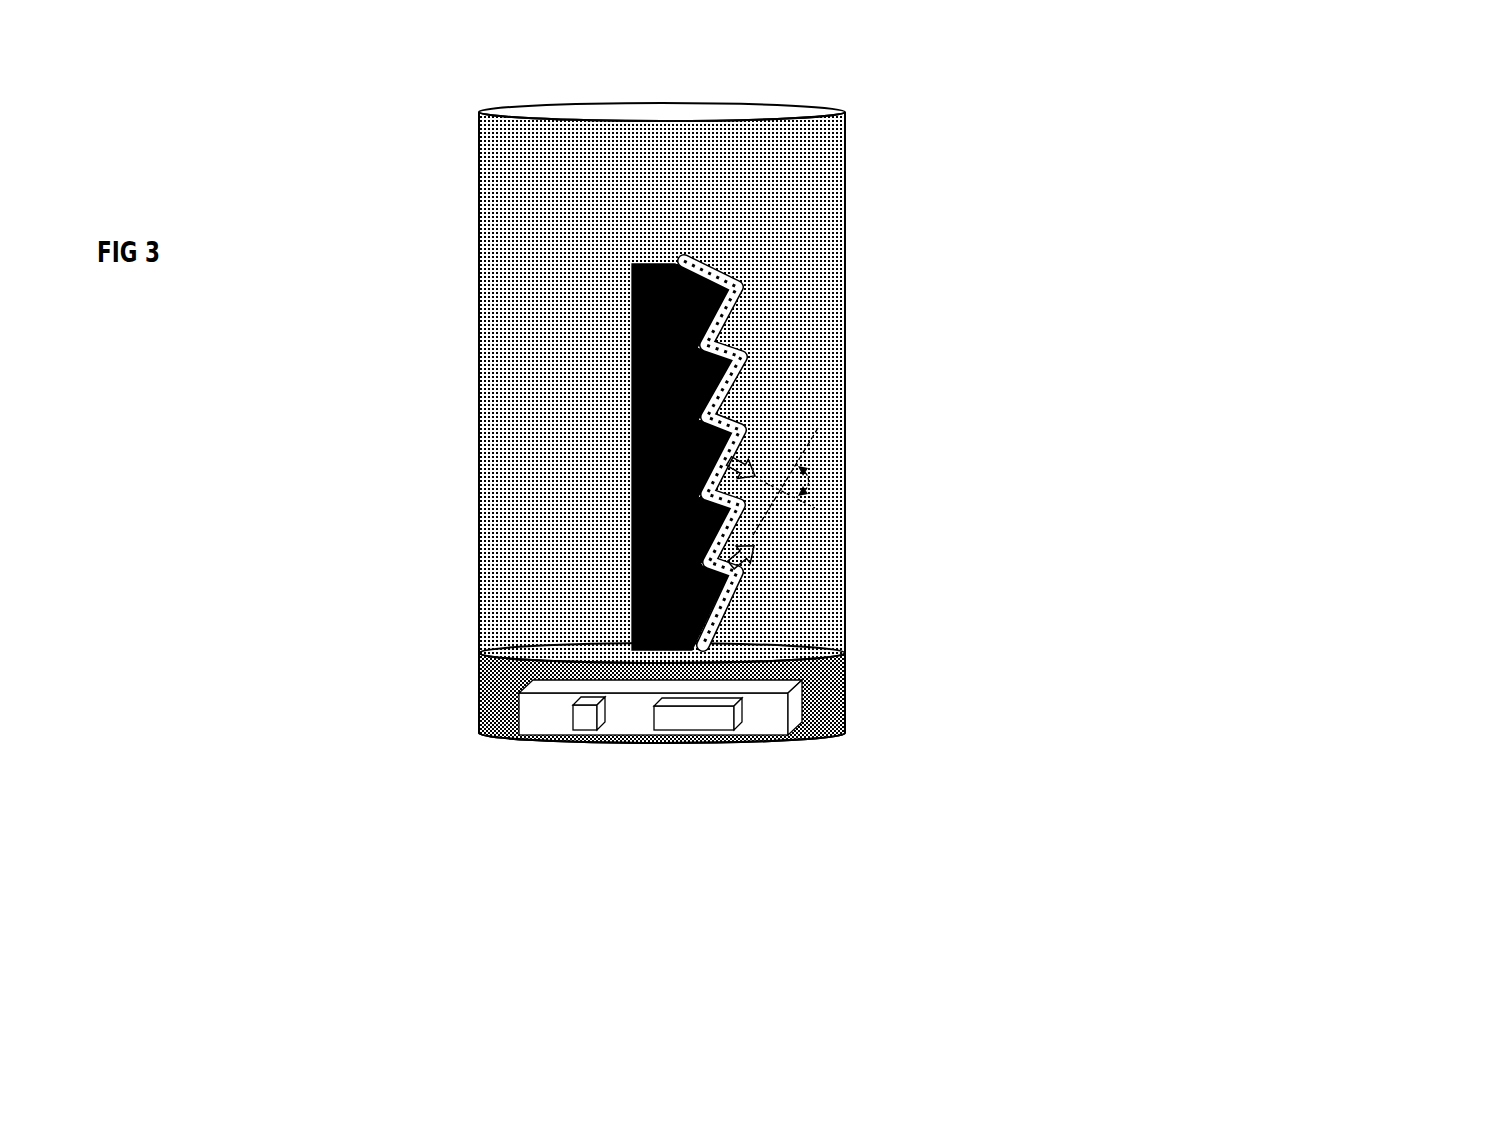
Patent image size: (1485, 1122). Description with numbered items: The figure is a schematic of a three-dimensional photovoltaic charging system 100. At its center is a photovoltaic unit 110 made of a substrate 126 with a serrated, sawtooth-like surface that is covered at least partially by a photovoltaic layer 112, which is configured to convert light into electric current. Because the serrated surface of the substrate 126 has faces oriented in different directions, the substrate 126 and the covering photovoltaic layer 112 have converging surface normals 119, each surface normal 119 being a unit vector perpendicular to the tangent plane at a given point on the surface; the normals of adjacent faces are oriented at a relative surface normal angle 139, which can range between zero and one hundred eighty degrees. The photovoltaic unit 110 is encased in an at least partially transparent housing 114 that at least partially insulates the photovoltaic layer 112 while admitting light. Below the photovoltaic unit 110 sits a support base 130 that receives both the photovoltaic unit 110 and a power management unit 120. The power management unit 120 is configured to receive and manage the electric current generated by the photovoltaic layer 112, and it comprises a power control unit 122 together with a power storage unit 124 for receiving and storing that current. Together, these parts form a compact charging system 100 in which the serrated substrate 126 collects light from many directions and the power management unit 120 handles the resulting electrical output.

The three-dimensional photovoltaic charging system 100 is at (233, 195).
The photovoltaic unit 110 is at (783, 469).
The photovoltaic layer 112 is at (735, 320).
The transparent housing 114 is at (845, 143).
The surface normal 119 is at (768, 553).
The power management unit 120 is at (972, 793).
The power control unit 122 is at (693, 736).
The power storage unit 124 is at (585, 736).
The substrate 126 is at (629, 430).
The support base 130 is at (476, 691).
The relative surface normal angle 139 is at (826, 477).